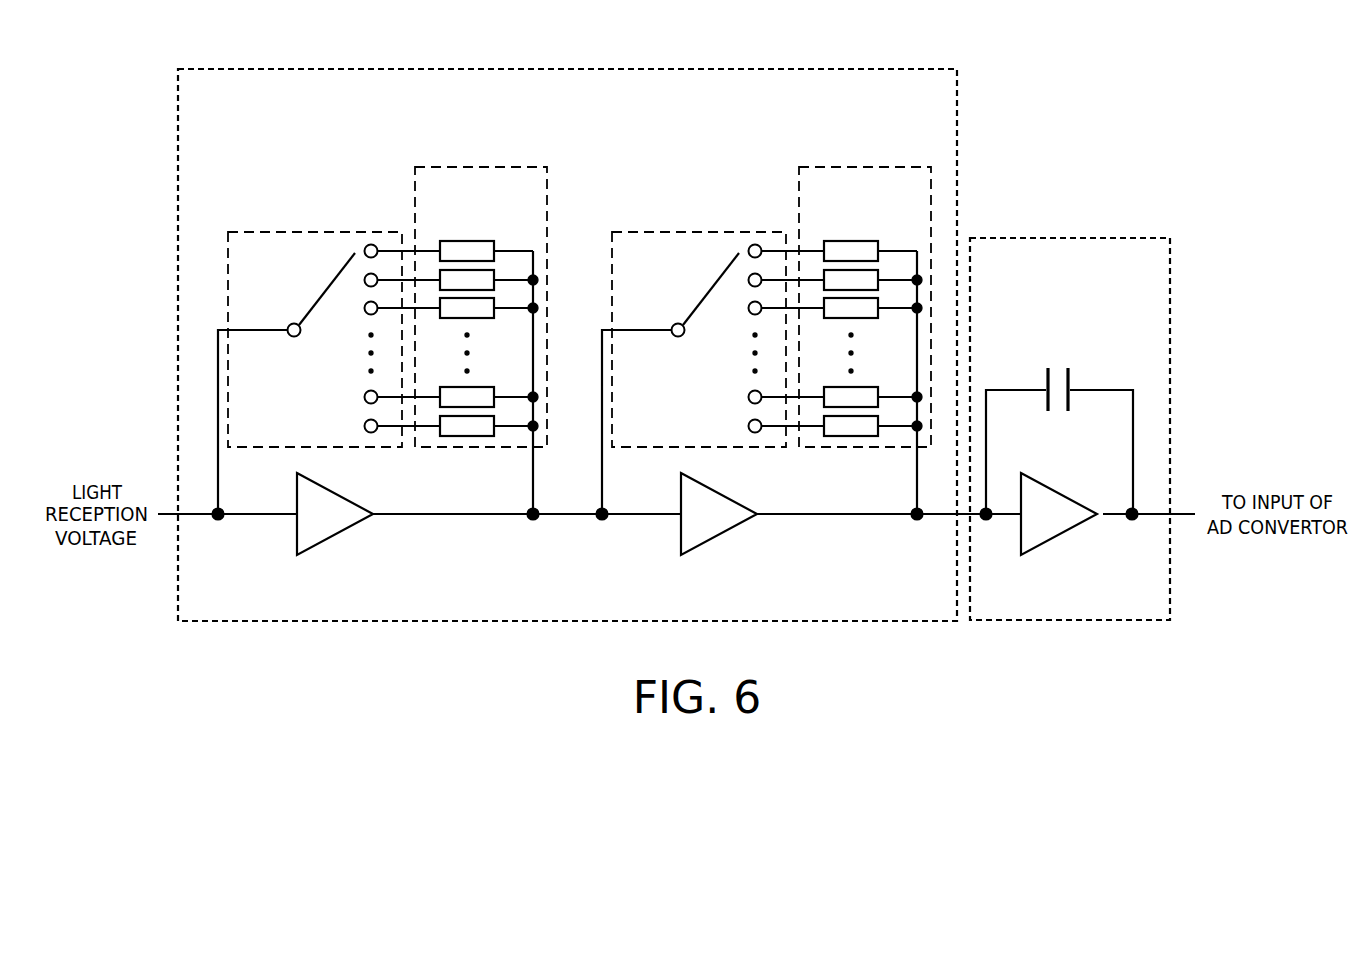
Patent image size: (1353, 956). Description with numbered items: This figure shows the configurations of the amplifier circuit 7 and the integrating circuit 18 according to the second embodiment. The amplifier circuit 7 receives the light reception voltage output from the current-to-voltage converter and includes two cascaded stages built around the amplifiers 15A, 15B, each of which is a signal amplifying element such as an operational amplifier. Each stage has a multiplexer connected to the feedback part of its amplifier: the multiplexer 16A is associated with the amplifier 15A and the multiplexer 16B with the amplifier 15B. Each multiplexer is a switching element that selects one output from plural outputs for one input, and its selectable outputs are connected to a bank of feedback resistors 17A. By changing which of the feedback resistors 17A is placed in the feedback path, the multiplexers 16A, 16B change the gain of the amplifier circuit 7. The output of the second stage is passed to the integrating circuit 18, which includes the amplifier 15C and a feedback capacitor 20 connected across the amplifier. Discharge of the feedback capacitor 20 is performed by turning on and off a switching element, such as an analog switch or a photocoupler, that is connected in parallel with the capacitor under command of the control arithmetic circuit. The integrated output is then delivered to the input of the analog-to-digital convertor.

The amplifier circuit 7 is at (575, 68).
The amplifier 15A is at (333, 538).
The amplifier 15B is at (717, 538).
The amplifier 15C is at (1057, 538).
The multiplexer 16A is at (335, 231).
The multiplexer 16B is at (719, 231).
The feedback resistors 17A is at (483, 166).
The integrating circuit 18 is at (1078, 237).
The feedback capacitor 20 is at (1071, 384).